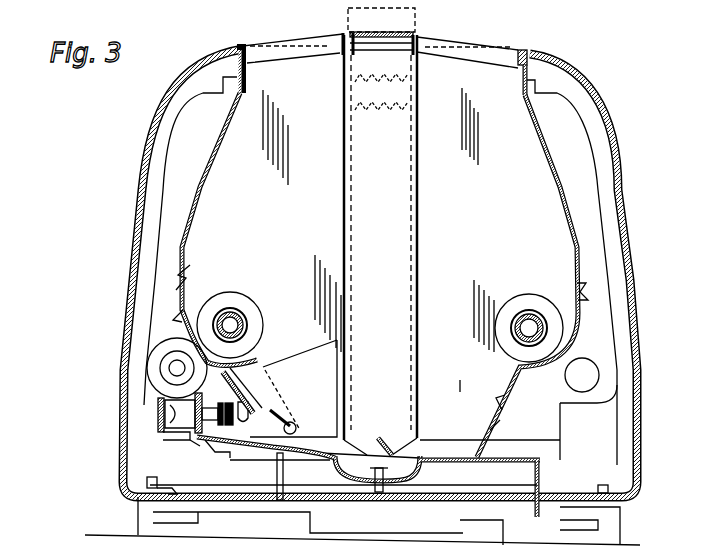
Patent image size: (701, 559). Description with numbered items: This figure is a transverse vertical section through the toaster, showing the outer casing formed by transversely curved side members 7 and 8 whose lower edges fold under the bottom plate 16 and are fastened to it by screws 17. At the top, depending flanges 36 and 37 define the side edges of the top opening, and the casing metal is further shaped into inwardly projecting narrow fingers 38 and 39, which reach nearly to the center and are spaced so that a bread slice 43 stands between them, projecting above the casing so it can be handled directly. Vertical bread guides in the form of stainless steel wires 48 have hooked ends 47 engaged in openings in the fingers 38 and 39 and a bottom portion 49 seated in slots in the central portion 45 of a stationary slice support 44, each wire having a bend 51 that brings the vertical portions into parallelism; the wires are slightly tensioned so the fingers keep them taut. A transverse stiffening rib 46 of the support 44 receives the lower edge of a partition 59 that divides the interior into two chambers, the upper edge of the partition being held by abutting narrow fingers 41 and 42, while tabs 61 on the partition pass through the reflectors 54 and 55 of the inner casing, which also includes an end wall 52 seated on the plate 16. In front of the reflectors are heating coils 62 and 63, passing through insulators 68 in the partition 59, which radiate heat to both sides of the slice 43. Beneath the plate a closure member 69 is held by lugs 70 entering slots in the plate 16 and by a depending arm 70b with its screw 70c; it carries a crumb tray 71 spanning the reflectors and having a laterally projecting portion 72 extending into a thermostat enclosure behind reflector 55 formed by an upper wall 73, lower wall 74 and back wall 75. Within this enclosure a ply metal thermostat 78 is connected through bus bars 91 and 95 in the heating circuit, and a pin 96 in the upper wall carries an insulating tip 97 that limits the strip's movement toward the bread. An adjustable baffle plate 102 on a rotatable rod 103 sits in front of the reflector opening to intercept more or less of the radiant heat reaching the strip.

The side member 7 is at (600, 98).
The side member 8 is at (143, 133).
The bottom plate 16 is at (578, 493).
The screws 17 is at (603, 485).
The depending flange 36 is at (525, 50).
The depending flange 37 is at (237, 47).
The narrow finger 38 is at (473, 50).
The narrow finger 39 is at (255, 47).
The narrow finger 41 is at (410, 36).
The narrow finger 42 is at (381, 59).
The bread slice 43 is at (445, 43).
The stationary slice support 44 is at (401, 474).
The central portion 45 is at (392, 438).
The transverse stiffening rib 46 is at (437, 447).
The hooked ends 47 is at (338, 45).
The stainless steel wires 48 is at (420, 188).
The bottom portion 49 is at (365, 443).
The bend 51 is at (330, 437).
The end wall 52 is at (587, 212).
The reflector 54 is at (550, 143).
The reflector 55 is at (220, 133).
The partition 59 is at (536, 351).
The tabs 61 is at (200, 187).
The heating coil 62 is at (514, 289).
The heating coil 63 is at (265, 289).
The insulators 68 is at (227, 293).
The closure member 69 is at (337, 503).
The lugs 70 is at (157, 487).
The depending arm 70b is at (548, 507).
The screw 70c is at (445, 460).
The crumb tray 71 is at (432, 467).
The laterally projecting portion 72 is at (210, 455).
The upper wall 73 is at (193, 350).
The lower wall 74 is at (200, 448).
The back wall 75 is at (182, 432).
The ply metal thermostat 78 is at (240, 393).
The bus bar 91 is at (157, 410).
The bus bar 95 is at (158, 400).
The pin 96 is at (255, 365).
The insulating tip 97 is at (268, 385).
The adjustable baffle plate 102 is at (273, 413).
The rod 103 is at (306, 425).